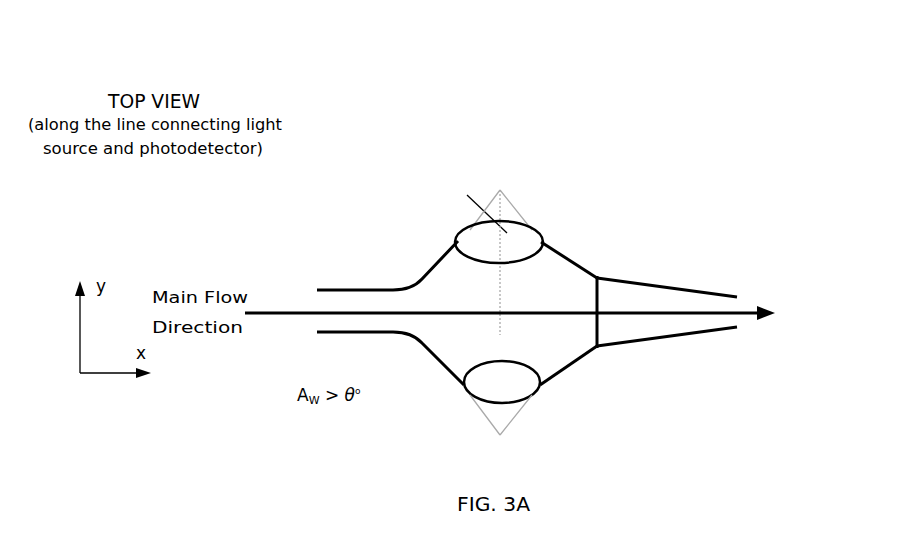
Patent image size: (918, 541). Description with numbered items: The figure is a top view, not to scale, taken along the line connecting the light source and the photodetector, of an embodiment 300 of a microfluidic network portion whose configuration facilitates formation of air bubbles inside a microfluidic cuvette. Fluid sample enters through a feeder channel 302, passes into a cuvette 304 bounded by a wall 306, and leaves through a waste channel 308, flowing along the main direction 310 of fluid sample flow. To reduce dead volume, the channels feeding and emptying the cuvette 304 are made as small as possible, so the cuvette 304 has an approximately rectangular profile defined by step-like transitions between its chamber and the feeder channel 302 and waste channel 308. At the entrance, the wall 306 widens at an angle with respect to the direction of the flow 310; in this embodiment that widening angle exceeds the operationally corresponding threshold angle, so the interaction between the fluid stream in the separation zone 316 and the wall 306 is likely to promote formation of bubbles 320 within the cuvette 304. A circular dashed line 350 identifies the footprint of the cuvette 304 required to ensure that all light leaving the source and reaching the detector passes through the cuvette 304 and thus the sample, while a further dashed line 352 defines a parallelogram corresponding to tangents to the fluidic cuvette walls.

The embodiment of a microfluidic network portion 300 is at (574, 82).
The feeder channel 302 is at (327, 322).
The cuvette 304 is at (547, 280).
The wall 306 is at (433, 355).
The waste channel 308 is at (668, 297).
The main direction of fluid sample flow 310 is at (740, 303).
The separation zone 316 is at (432, 276).
The bubbles 320 is at (592, 412).
The circular dashed line 350 is at (578, 322).
The dashed line 352 is at (518, 417).